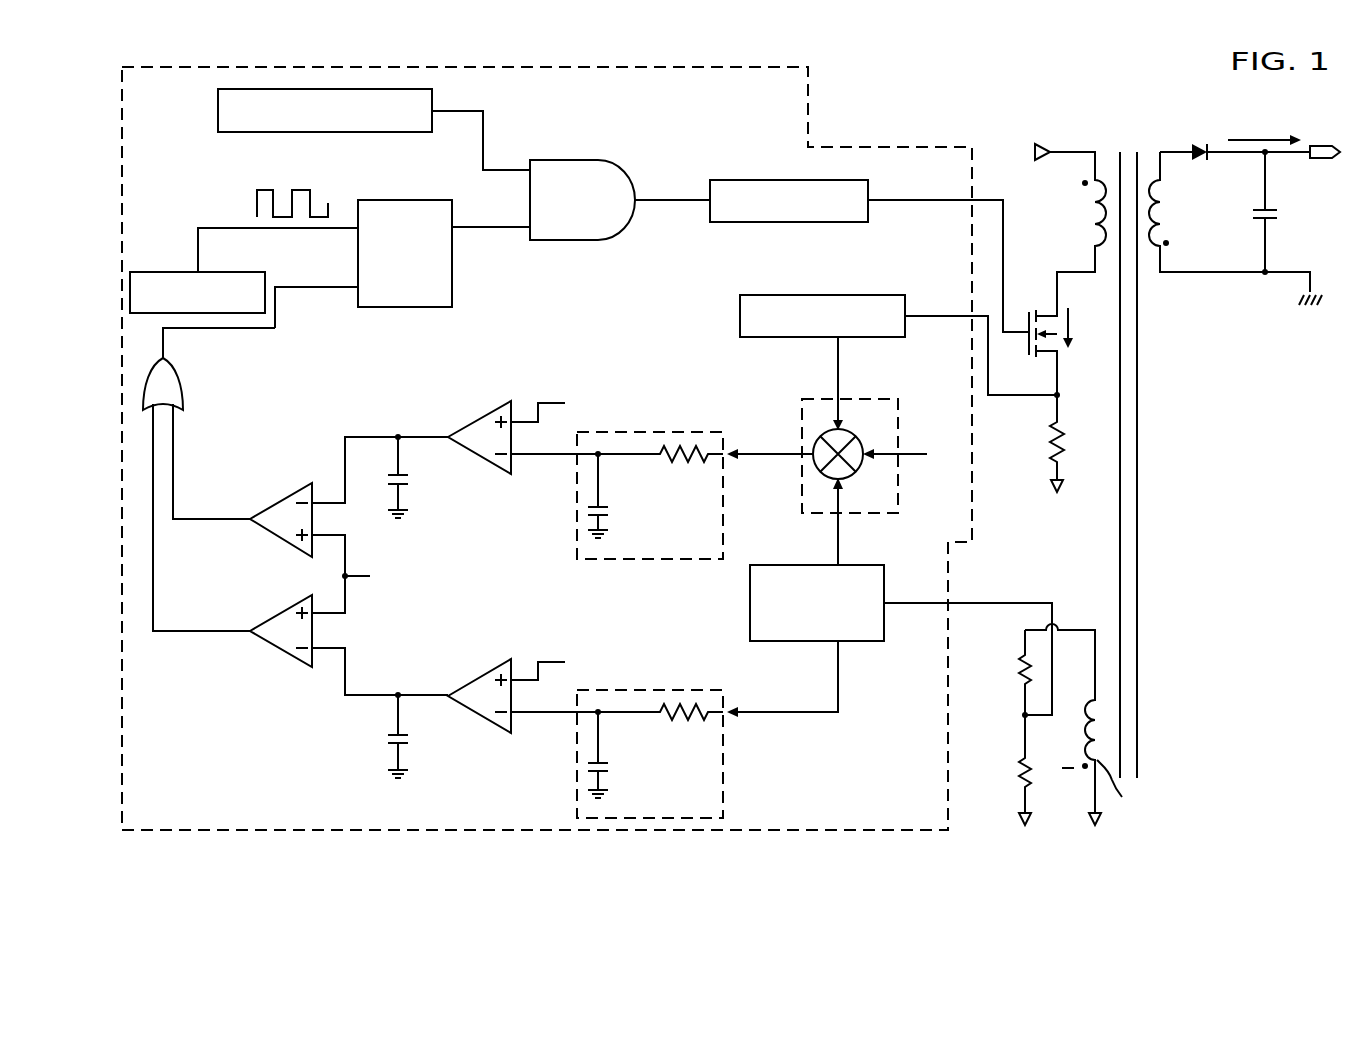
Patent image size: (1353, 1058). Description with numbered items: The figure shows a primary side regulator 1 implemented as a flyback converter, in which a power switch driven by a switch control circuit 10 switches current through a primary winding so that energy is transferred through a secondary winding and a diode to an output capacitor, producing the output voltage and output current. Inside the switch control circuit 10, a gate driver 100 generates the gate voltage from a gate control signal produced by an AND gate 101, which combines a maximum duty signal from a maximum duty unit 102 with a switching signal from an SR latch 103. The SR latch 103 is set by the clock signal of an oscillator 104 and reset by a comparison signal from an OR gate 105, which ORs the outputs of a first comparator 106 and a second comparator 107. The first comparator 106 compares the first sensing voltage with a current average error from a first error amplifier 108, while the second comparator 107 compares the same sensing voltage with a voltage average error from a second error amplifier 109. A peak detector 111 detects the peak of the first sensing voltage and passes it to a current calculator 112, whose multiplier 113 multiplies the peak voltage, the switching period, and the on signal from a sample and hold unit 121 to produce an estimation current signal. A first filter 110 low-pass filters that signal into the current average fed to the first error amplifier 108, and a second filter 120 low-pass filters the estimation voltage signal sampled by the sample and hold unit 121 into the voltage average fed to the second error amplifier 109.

The primary side regulator 1 is at (933, 92).
The switch control circuit 10 is at (848, 147).
The gate driver 100 is at (757, 180).
The AND gate 101 is at (581, 160).
The maximum duty unit 102 is at (218, 111).
The SR latch 103 is at (452, 296).
The oscillator 104 is at (154, 272).
The OR gate 105 is at (186, 396).
The first comparator 106 is at (282, 488).
The second comparator 107 is at (275, 650).
The first error amplifier 108 is at (485, 403).
The second error amplifier 109 is at (487, 732).
The first filter 110 is at (577, 540).
The peak detector 111 is at (740, 316).
The current calculator 112 is at (898, 421).
The multiplier 113 is at (856, 468).
The second filter 120 is at (724, 773).
The sample and hold unit 121 is at (750, 602).